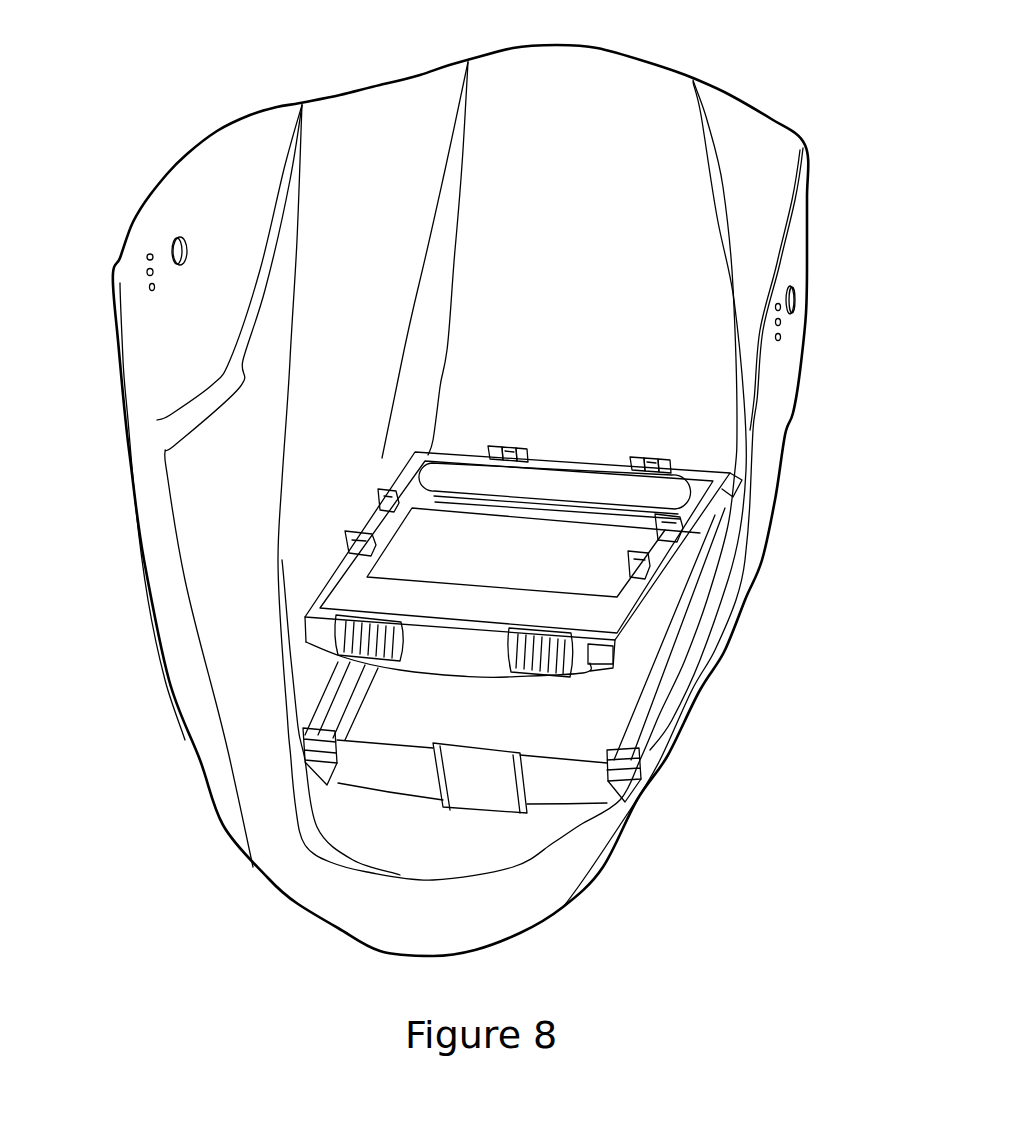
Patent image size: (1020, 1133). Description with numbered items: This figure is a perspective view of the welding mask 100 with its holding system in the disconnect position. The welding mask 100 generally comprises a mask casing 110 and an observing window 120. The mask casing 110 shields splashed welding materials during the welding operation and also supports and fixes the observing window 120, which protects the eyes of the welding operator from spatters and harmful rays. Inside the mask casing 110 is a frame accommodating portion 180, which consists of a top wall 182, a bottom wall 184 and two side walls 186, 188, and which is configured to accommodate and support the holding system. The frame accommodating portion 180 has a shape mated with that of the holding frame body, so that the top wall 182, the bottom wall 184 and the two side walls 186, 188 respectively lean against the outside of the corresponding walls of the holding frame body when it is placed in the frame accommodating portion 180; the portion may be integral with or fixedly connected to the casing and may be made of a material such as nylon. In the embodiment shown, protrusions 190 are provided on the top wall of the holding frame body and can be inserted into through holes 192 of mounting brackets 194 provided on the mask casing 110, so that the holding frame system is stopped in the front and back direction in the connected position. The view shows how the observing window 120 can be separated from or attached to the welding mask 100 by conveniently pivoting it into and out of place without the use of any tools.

The welding mask 100 is at (770, 72).
The mask casing 110 is at (800, 353).
The observing window 120 is at (667, 578).
The frame accommodating portion 180 is at (563, 817).
The top wall 182 is at (733, 492).
The bottom wall 184 is at (577, 791).
The side wall 186 is at (327, 688).
The side wall 188 is at (653, 722).
The protrusion 190 is at (499, 445).
The through hole 192 is at (507, 451).
The mounting bracket 194 is at (527, 447).